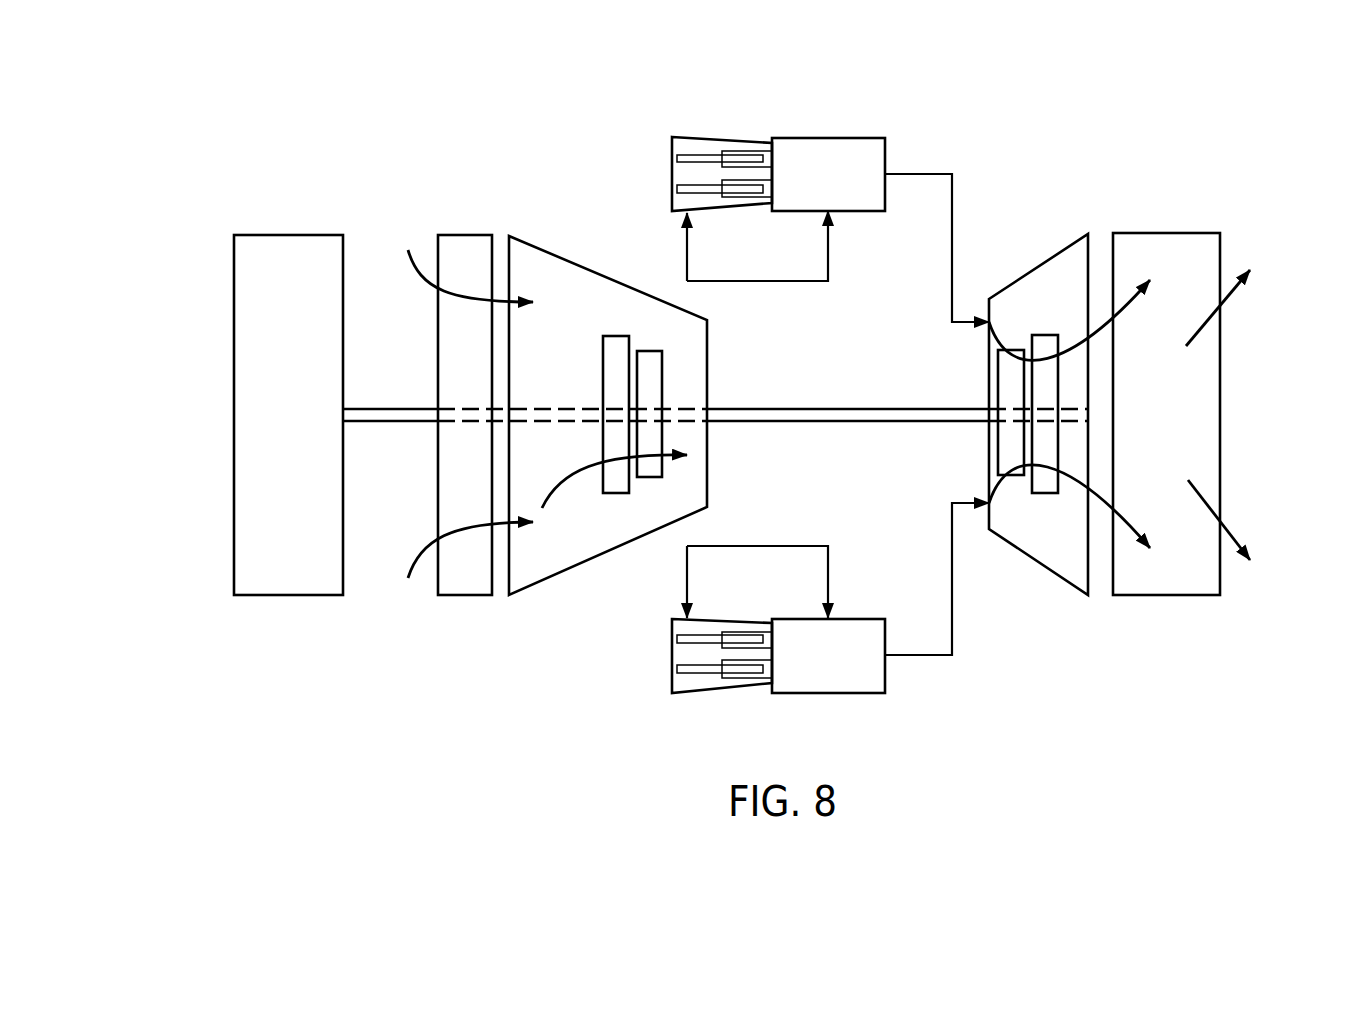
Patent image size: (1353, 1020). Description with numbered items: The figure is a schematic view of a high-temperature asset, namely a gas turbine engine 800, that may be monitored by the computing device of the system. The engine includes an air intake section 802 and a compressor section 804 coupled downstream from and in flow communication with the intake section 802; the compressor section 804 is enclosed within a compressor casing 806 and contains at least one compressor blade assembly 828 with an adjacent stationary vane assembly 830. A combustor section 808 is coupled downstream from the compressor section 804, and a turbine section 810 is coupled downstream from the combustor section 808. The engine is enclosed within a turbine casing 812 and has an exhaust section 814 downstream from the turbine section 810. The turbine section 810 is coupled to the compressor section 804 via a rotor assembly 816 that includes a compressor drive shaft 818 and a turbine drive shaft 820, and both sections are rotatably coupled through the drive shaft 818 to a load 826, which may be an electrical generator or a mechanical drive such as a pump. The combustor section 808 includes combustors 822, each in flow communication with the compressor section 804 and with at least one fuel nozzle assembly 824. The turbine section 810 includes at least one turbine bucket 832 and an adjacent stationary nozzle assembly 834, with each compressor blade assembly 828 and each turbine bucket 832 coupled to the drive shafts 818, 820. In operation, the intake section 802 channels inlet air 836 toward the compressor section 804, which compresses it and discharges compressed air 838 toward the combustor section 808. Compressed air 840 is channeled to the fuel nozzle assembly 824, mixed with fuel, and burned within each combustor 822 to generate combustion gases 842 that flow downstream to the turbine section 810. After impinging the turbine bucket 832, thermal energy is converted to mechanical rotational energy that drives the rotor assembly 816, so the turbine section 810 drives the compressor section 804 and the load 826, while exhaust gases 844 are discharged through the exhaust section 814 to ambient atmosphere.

The gas turbine engine 800 is at (205, 130).
The air intake section 802 is at (465, 235).
The compressor section 804 is at (601, 358).
The compressor casing 806 is at (585, 262).
The combustor section 808 is at (1046, 345).
The turbine section 810 is at (1048, 364).
The turbine casing 812 is at (1015, 275).
The exhaust section 814 is at (1168, 233).
The rotor assembly 816 is at (762, 401).
The compressor drive shaft 818 is at (537, 421).
The turbine drive shaft 820 is at (1068, 432).
The combustor 822 is at (849, 186).
The fuel nozzle assembly 824 is at (695, 148).
The load 826 is at (290, 235).
The compressor blade assembly 828 is at (650, 477).
The stationary vane assembly 830 is at (617, 493).
The turbine bucket 832 is at (1010, 485).
The stationary nozzle assembly 834 is at (1045, 493).
The inlet air 836 is at (417, 283).
The compressed air 838 is at (562, 480).
The compressed air 840 is at (690, 248).
The combustion gases 842 is at (1100, 335).
The exhaust gases 844 is at (1228, 305).